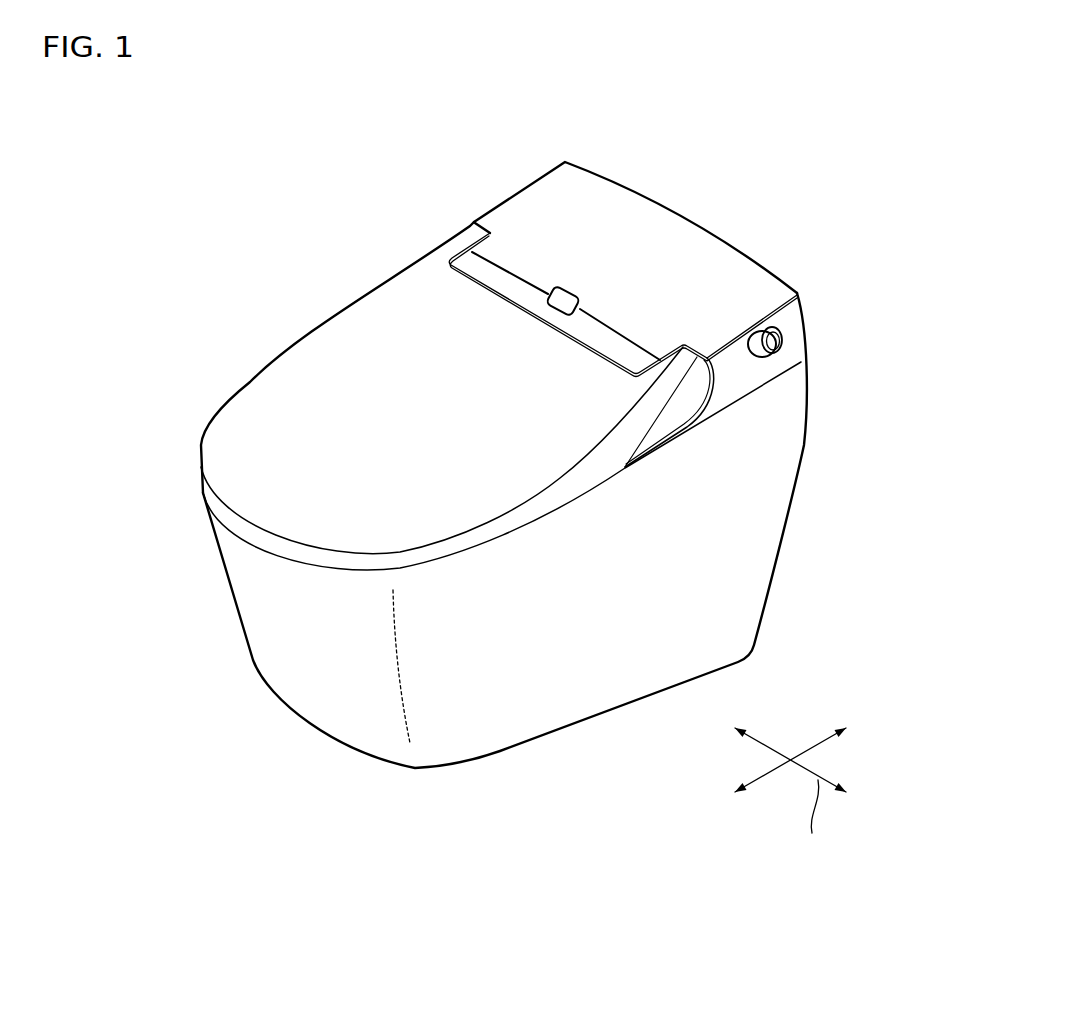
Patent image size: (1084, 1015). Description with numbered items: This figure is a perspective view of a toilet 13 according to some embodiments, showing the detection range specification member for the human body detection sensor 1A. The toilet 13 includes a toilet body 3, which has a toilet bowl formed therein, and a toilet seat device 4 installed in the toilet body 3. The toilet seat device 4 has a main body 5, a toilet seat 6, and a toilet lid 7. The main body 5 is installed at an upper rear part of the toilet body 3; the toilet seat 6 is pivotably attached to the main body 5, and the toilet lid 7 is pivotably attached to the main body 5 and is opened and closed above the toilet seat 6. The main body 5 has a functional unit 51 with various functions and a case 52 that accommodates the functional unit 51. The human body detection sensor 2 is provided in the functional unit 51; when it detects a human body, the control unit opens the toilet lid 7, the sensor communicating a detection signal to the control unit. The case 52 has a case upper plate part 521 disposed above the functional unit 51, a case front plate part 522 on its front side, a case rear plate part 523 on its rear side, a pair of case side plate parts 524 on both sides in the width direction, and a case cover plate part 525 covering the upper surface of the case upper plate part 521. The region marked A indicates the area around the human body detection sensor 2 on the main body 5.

The detection range specification member for the human body detection sensor 1A is at (558, 290).
The toilet 13 is at (225, 687).
The toilet body 3 is at (790, 503).
The toilet seat device 4 is at (759, 218).
The main body 5 is at (786, 281).
The functional unit 51 is at (752, 268).
The case 52 is at (806, 333).
The case upper plate part 521 is at (683, 233).
The case front plate part 522 is at (452, 295).
The case rear plate part 523 is at (804, 314).
The case side plate parts 524 is at (488, 222).
The case cover plate part 525 is at (600, 195).
The human body detection sensor 2 is at (577, 291).
The toilet seat 6 is at (220, 444).
The toilet lid 7 is at (307, 342).
The region A is at (600, 290).